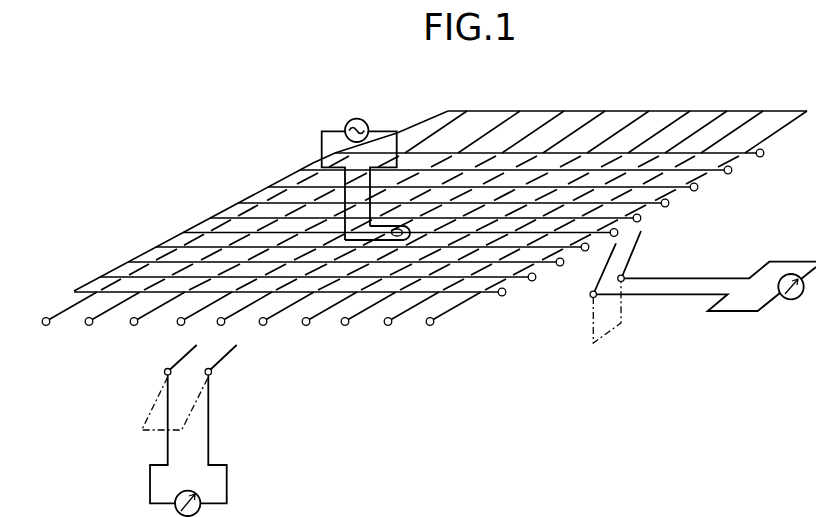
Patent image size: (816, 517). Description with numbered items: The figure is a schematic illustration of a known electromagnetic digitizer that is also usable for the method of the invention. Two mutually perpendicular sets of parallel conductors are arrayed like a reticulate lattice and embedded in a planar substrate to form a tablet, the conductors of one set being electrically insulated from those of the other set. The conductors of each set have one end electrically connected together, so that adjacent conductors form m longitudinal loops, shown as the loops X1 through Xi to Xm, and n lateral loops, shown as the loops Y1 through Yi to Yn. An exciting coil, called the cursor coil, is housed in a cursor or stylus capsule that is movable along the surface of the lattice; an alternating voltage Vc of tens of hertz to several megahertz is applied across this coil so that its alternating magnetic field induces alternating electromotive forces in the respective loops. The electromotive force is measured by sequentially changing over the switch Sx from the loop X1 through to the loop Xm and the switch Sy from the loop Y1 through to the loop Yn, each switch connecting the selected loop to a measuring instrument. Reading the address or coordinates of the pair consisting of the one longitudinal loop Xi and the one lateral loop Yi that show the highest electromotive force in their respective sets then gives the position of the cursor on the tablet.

The first longitudinal loop X1 is at (188, 255).
The longitudinal loop Xi is at (371, 253).
The last longitudinal loop Xm is at (612, 232).
The first lateral loop Y1 is at (292, 307).
The lateral loop Yi is at (408, 246).
The last lateral loop Yn is at (556, 164).
The alternating voltage source Vc is at (359, 166).
The switch for longitudinal loops Sx is at (168, 437).
The switch for lateral loops Sy is at (652, 278).